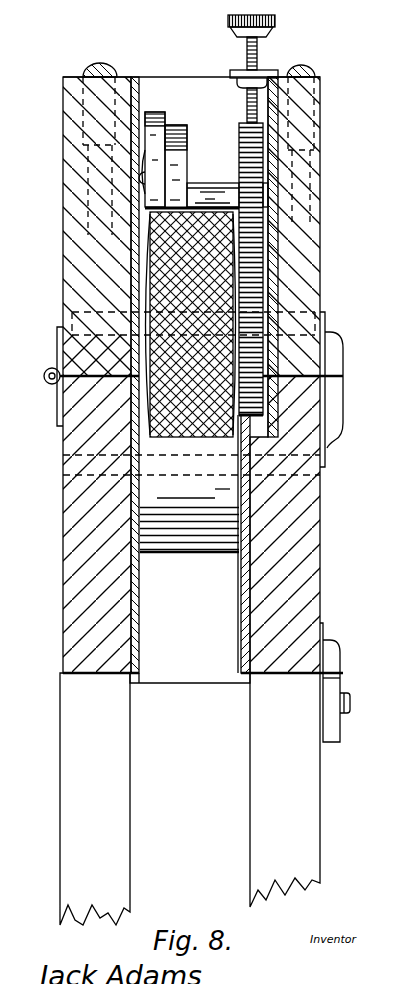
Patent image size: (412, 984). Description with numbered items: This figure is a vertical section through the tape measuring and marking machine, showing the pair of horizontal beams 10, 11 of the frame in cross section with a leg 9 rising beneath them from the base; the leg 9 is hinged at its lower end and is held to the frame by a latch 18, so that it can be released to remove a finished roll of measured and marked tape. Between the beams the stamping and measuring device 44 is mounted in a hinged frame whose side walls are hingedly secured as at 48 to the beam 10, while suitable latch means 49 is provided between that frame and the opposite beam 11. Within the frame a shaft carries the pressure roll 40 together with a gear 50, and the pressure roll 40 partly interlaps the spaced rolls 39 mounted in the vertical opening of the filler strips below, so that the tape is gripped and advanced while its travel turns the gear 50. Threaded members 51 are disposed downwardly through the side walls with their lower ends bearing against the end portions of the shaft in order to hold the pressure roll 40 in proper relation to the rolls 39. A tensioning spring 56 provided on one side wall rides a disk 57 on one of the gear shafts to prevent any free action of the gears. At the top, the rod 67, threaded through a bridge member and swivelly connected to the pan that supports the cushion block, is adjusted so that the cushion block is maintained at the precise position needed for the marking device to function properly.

The leg 9 is at (310, 798).
The horizontal beam 10 is at (75, 582).
The horizontal beam 11 is at (305, 563).
The latch 18 is at (337, 650).
The roll 39 is at (195, 538).
The pressure roll 40 is at (170, 270).
The stamping and measuring device 44 is at (62, 173).
The hinge 48 is at (47, 385).
The latch means 49 is at (341, 432).
The gear 50 is at (262, 277).
The threaded member 51 is at (100, 68).
The tensioning spring 56 is at (157, 111).
The disk 57 is at (178, 152).
The rod 67 is at (247, 50).